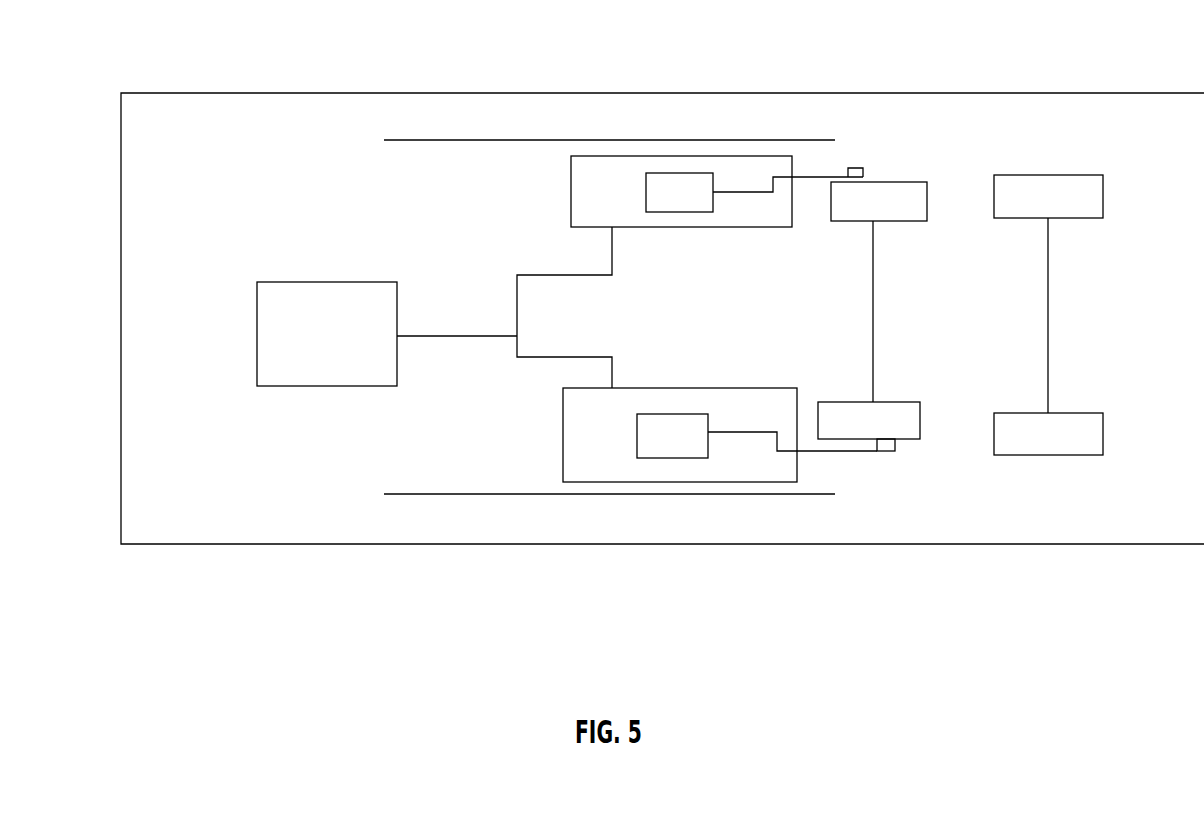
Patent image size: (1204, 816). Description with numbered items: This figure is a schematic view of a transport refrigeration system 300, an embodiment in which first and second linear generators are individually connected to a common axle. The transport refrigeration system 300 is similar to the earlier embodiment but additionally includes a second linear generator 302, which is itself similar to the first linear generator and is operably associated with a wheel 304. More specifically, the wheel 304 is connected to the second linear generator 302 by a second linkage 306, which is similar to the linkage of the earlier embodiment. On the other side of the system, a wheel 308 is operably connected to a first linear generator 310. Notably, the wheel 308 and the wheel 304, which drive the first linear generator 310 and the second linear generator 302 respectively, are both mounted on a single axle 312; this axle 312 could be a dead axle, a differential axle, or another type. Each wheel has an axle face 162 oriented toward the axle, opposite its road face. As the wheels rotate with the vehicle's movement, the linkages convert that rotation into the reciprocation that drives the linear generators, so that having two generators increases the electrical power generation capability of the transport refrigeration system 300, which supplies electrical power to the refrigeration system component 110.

The transport refrigeration system 300 is at (252, 601).
The refrigeration system component 110 is at (346, 352).
The second linear generator 302 is at (580, 212).
The wheel 304 is at (888, 208).
The second linkage 306 is at (808, 176).
The wheel 308 is at (902, 427).
The first linear generator 310 is at (615, 463).
The axle 312 is at (873, 278).
The axle face 162 is at (847, 393).